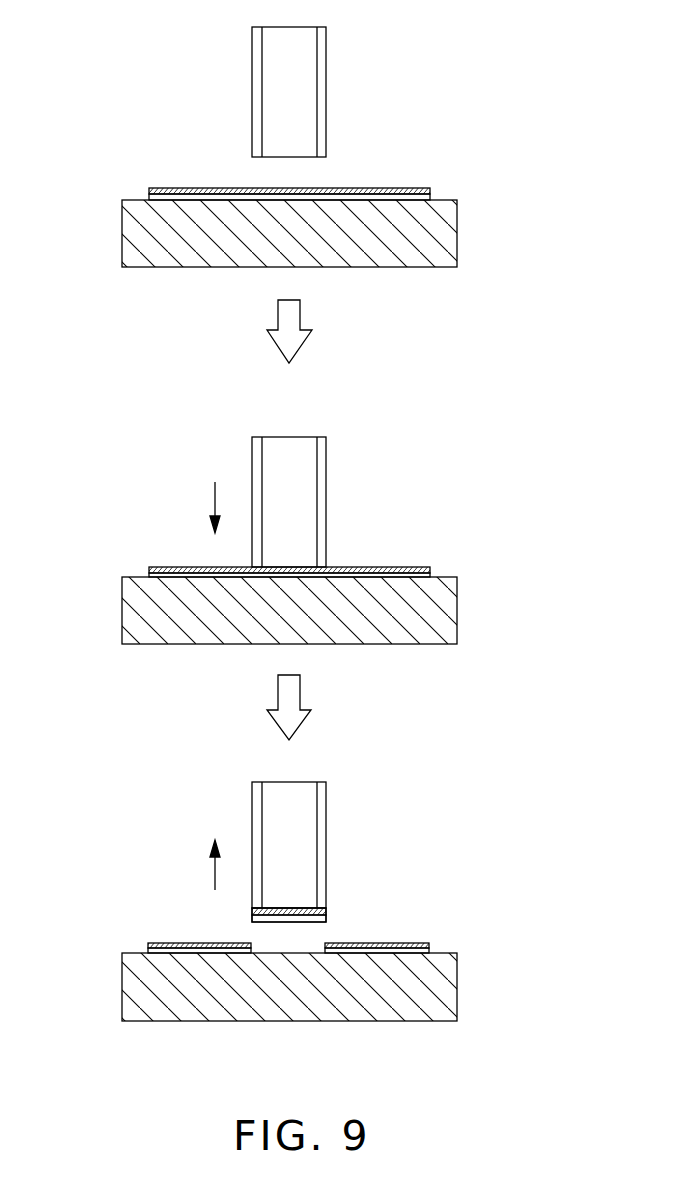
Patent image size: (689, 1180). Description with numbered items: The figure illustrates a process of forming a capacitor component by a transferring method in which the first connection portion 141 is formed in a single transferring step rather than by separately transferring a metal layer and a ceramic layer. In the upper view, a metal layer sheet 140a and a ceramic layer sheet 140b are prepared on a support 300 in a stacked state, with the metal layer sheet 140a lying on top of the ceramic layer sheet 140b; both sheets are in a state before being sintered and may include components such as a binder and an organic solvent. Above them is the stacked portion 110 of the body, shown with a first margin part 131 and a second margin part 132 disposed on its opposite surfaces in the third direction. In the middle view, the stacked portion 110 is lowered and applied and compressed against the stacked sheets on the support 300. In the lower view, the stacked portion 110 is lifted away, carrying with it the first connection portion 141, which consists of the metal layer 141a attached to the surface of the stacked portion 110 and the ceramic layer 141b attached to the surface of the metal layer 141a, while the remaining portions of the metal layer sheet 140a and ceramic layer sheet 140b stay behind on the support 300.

The stacked portion 110 is at (306, 50).
The first margin part 131 is at (322, 107).
The second margin part 132 is at (255, 83).
The metal layer sheet 140a is at (431, 191).
The ceramic layer sheet 140b is at (431, 197).
The first connection portion 141 is at (105, 870).
The metal layer 141a is at (251, 911).
The ceramic layer 141b is at (251, 920).
The support 300 is at (443, 228).